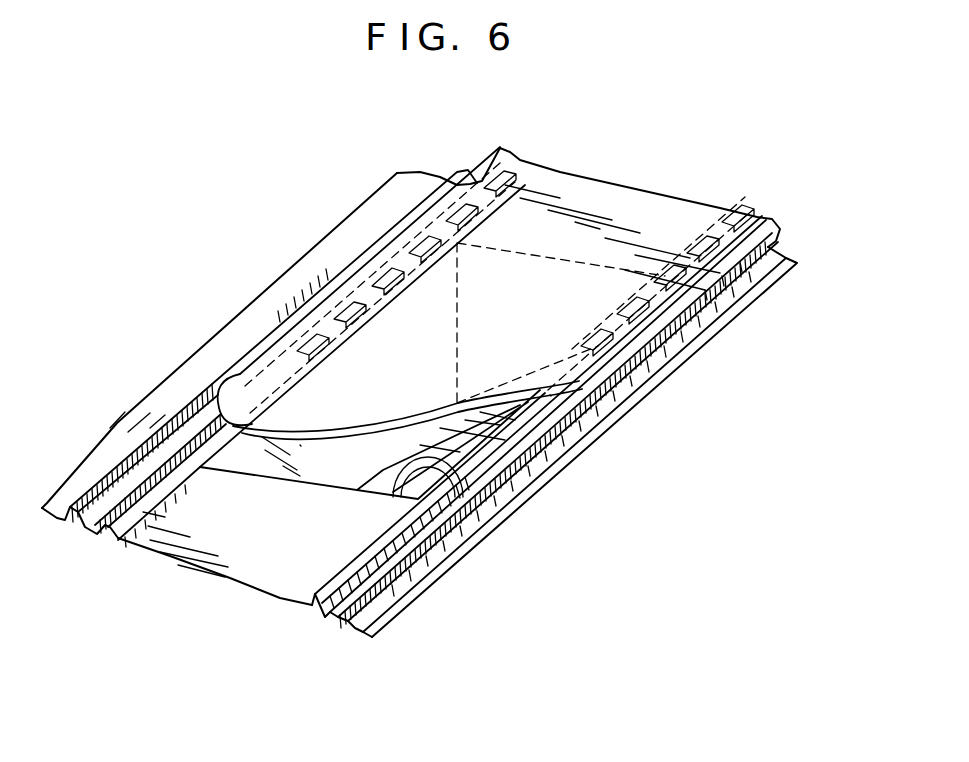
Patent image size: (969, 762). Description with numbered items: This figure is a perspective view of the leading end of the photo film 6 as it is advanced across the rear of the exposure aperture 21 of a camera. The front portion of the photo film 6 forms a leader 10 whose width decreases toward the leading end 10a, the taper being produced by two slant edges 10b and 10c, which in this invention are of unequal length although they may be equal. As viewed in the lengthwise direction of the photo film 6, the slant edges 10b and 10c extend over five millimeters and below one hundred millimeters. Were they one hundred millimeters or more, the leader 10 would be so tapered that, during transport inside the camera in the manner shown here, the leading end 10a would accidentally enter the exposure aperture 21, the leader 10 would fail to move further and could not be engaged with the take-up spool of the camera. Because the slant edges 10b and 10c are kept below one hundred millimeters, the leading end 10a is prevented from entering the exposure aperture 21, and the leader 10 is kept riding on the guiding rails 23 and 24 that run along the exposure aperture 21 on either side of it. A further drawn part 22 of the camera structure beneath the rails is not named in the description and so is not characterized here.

The photo film 6 is at (612, 198).
The leader 10 is at (303, 397).
The leading end 10a is at (233, 432).
The slant edge 10b is at (220, 400).
The slant edge 10c is at (392, 418).
The exposure aperture 21 is at (318, 483).
The base plate 22 is at (200, 553).
The guiding rail 23 is at (123, 500).
The guiding rail 24 is at (407, 520).